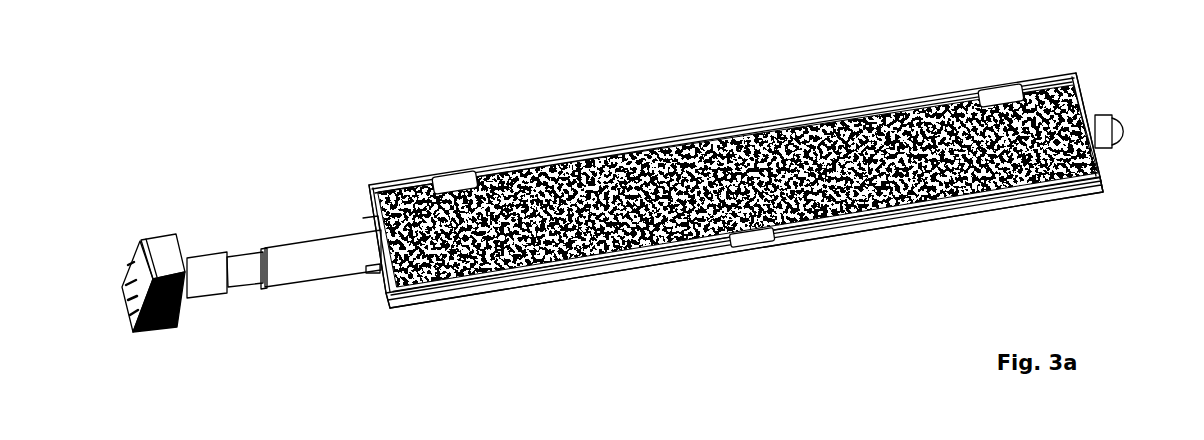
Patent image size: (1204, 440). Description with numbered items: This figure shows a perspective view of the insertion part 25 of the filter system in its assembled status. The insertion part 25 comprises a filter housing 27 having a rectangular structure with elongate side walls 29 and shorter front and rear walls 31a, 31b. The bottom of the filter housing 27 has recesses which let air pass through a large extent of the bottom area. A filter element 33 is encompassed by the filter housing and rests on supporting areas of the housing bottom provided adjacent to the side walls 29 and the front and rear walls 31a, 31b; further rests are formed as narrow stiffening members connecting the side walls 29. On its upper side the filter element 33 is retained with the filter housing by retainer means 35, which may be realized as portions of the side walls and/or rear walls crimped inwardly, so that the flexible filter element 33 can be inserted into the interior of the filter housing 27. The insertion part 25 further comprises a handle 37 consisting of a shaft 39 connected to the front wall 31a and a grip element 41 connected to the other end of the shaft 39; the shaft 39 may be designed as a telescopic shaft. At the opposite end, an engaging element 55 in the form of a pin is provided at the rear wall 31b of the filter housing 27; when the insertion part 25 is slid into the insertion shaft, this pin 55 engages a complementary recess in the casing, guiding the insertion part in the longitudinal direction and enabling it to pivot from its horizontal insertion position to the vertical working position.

The insertion part 25 is at (612, 297).
The filter housing 27 is at (448, 300).
The side walls 29 is at (695, 135).
The front wall 31a is at (367, 207).
The rear wall 31b is at (1080, 102).
The filter element 33 is at (905, 182).
The retainer means 35 is at (460, 183).
The handle 37 is at (262, 318).
The shaft 39 is at (292, 253).
The grip element 41 is at (162, 253).
The engaging element 55 is at (1103, 132).